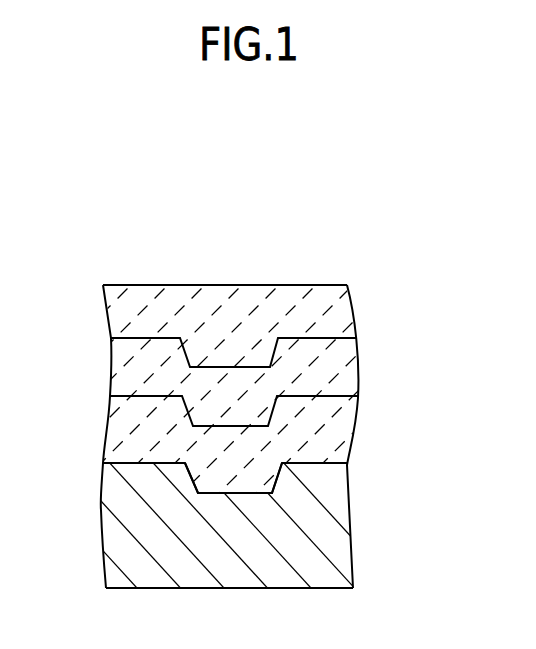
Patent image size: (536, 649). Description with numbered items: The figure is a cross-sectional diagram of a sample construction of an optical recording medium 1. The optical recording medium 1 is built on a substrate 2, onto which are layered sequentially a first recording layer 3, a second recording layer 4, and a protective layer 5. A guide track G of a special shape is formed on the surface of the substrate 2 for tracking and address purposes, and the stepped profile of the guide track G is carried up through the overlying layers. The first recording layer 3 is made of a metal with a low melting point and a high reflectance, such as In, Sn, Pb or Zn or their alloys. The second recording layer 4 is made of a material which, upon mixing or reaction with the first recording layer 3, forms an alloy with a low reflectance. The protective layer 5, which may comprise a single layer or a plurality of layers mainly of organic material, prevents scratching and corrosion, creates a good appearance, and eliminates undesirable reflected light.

The optical recording medium 1 is at (380, 262).
The substrate 2 is at (330, 535).
The first recording layer 3 is at (335, 446).
The second recording layer 4 is at (340, 376).
The protective layer 5 is at (340, 319).
The guide track G is at (219, 477).